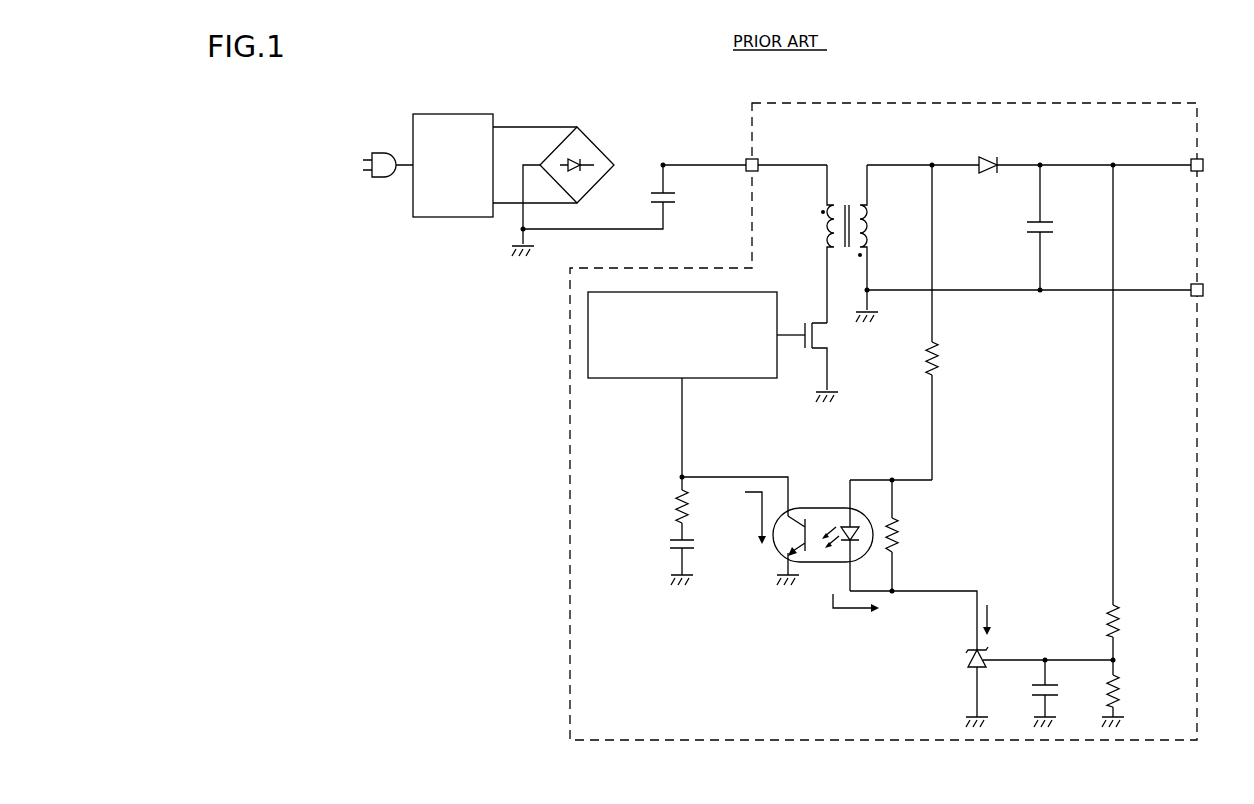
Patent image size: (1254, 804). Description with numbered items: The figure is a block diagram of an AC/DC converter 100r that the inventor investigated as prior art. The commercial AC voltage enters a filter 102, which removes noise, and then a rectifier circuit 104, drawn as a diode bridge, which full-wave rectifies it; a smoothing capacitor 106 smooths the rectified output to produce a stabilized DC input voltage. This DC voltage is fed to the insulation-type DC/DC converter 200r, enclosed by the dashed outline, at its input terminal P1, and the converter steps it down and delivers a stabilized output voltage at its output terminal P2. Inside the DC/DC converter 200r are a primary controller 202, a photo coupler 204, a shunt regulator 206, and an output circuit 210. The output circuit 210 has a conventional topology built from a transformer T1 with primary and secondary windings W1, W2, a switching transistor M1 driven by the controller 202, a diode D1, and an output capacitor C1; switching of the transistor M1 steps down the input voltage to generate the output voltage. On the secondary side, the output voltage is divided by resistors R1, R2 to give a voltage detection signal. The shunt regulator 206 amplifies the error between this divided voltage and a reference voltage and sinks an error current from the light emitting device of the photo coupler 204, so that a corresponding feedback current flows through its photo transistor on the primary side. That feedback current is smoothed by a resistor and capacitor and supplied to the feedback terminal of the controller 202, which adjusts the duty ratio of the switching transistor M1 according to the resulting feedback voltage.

The AC/DC converter 100r is at (805, 779).
The filter 102 is at (443, 114).
The rectifier circuit 104 is at (597, 147).
The smoothing capacitor 106 is at (677, 197).
The DC/DC converter 200r is at (1038, 103).
The primary controller 202 is at (620, 378).
The photo coupler 204 is at (826, 507).
The shunt regulator 206 is at (962, 661).
The output circuit 210 is at (788, 413).
The input terminal P1 is at (748, 158).
The output terminal P2 is at (1203, 160).
The transformer T1 is at (851, 242).
The primary winding W1 is at (824, 233).
The secondary winding W2 is at (874, 233).
The switching transistor M1 is at (835, 331).
The diode D1 is at (988, 157).
The output capacitor C1 is at (1058, 227).
The resistor R1 is at (1122, 623).
The resistor R2 is at (1122, 693).